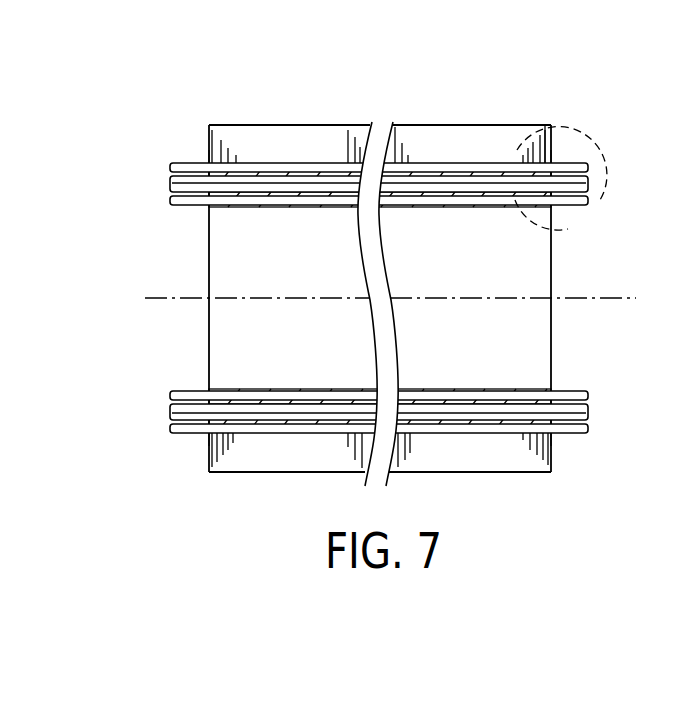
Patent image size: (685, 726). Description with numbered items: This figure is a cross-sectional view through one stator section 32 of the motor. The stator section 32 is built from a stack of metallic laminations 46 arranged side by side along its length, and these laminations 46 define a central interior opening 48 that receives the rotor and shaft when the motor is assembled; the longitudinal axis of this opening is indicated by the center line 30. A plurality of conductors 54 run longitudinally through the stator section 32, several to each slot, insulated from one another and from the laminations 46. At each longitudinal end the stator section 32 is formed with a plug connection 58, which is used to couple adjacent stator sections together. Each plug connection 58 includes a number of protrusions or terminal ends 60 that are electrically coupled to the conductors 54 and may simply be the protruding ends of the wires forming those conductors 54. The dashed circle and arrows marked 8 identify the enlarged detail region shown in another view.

The section line 8- 8 is at (568, 193).
The longitudinal axis 30 is at (578, 298).
The stator section 32 is at (437, 137).
The metallic laminations 46 is at (531, 150).
The interior opening 48 is at (527, 347).
The conductors 54 is at (303, 403).
The plug connection 58 is at (577, 448).
The protrusions or terminal ends 60 is at (583, 431).